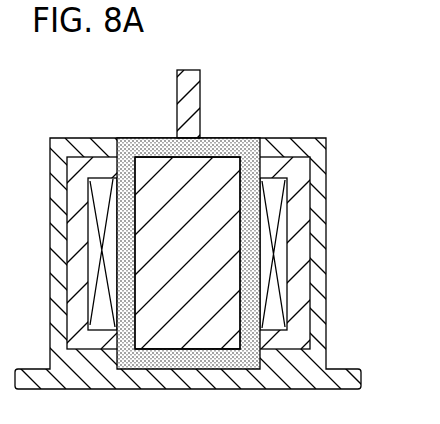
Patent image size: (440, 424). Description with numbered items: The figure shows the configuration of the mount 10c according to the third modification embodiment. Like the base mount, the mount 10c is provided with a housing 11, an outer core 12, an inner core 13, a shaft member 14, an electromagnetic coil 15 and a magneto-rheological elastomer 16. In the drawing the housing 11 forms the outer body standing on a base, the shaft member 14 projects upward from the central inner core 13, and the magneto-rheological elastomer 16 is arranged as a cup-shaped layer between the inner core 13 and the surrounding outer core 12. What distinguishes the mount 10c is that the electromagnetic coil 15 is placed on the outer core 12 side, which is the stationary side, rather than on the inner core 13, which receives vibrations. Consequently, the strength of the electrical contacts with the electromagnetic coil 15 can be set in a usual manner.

The mount 10c is at (285, 95).
The housing 11 is at (317, 306).
The outer core 12 is at (295, 256).
The inner core 13 is at (160, 183).
The shaft member 14 is at (200, 80).
The electromagnetic coil 15 is at (270, 208).
The magneto-rheological elastomer 16 is at (242, 140).